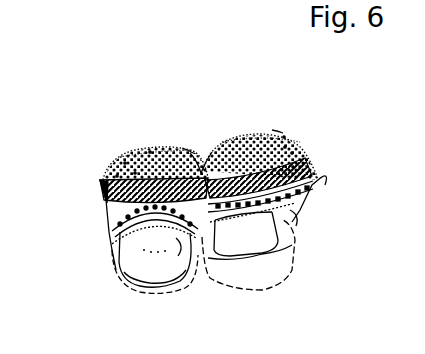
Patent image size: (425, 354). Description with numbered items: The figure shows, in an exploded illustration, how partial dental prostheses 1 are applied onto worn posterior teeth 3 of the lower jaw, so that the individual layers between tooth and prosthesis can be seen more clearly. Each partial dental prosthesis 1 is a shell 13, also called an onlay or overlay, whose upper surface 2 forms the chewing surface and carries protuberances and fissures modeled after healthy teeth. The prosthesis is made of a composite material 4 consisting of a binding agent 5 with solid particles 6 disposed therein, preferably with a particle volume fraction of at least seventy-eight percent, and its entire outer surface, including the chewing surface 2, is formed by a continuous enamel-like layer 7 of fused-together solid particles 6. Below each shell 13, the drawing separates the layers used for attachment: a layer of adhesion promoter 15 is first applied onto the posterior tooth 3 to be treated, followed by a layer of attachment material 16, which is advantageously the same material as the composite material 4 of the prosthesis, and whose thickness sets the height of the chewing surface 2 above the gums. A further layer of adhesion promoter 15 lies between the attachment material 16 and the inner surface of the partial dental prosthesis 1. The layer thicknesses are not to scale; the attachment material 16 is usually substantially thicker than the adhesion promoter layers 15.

The partial dental prosthesis 1 is at (125, 138).
The surface 2 is at (188, 148).
The posterior tooth 3 is at (148, 267).
The composite material 4 is at (154, 154).
The binding agent 5 is at (171, 155).
The solid particles 6 is at (150, 152).
The layer 7 is at (191, 153).
The shell 13 is at (149, 148).
The adhesion promoter 15 is at (0, 18).
The attachment material 16 is at (305, 187).